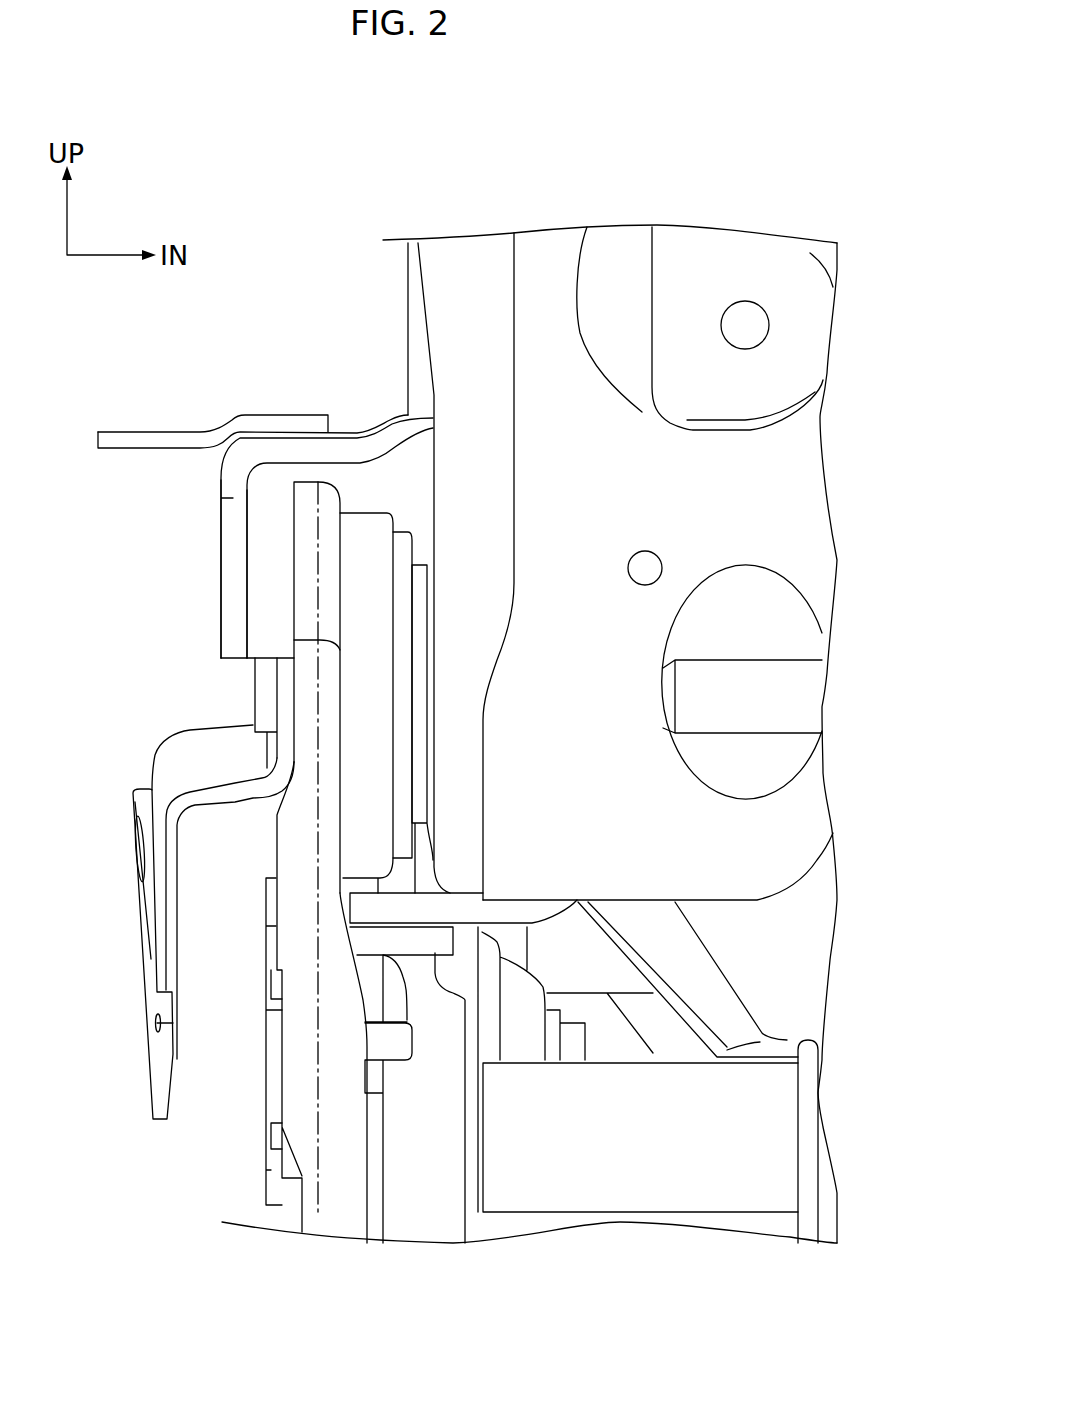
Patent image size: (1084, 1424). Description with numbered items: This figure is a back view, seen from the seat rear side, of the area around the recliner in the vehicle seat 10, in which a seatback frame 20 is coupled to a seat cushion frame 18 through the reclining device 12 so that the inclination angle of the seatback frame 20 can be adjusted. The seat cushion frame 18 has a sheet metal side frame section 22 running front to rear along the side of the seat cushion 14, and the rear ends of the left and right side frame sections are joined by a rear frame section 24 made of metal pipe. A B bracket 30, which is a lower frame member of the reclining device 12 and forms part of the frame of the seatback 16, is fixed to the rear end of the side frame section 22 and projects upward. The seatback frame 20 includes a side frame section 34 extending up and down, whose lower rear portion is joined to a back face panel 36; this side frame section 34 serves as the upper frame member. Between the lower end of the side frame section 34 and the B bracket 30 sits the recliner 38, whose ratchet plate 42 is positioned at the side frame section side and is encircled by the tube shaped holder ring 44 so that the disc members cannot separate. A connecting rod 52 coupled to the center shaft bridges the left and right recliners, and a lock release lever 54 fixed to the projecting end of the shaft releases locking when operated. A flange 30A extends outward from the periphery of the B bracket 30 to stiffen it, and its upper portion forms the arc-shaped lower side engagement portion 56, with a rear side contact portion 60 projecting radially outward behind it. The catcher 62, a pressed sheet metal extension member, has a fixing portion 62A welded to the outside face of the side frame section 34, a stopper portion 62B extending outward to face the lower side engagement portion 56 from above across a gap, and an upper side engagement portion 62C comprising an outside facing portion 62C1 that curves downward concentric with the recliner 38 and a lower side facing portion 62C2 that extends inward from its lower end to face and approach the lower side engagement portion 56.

The vehicle seat 10 is at (348, 130).
The reclining device 12 is at (249, 230).
The seat cushion 14 is at (746, 1180).
The seatback 16 is at (610, 684).
The seat cushion frame 18 is at (700, 1218).
The seatback frame 20 is at (545, 246).
The side frame section 22 is at (408, 1213).
The rear frame section 24 is at (585, 1213).
The B bracket 30 is at (268, 845).
The flange 30A is at (273, 1013).
The side frame section 34 is at (447, 263).
The back face panel 36 is at (620, 245).
The recliner 38 is at (434, 757).
The ratchet plate 42 is at (422, 720).
The holder ring 44 is at (375, 665).
The connecting rod 52 is at (745, 658).
The lock release lever 54 is at (140, 1010).
The lower side engagement portion 56 is at (305, 525).
The rear side contact portion 60 is at (300, 673).
The catcher 62 is at (373, 404).
The fixing portion 62A is at (405, 292).
The stopper portion 62B is at (287, 452).
The upper side engagement portion 62C is at (213, 603).
The outside facing portion 62C1 is at (218, 565).
The lower side facing portion 62C2 is at (267, 632).